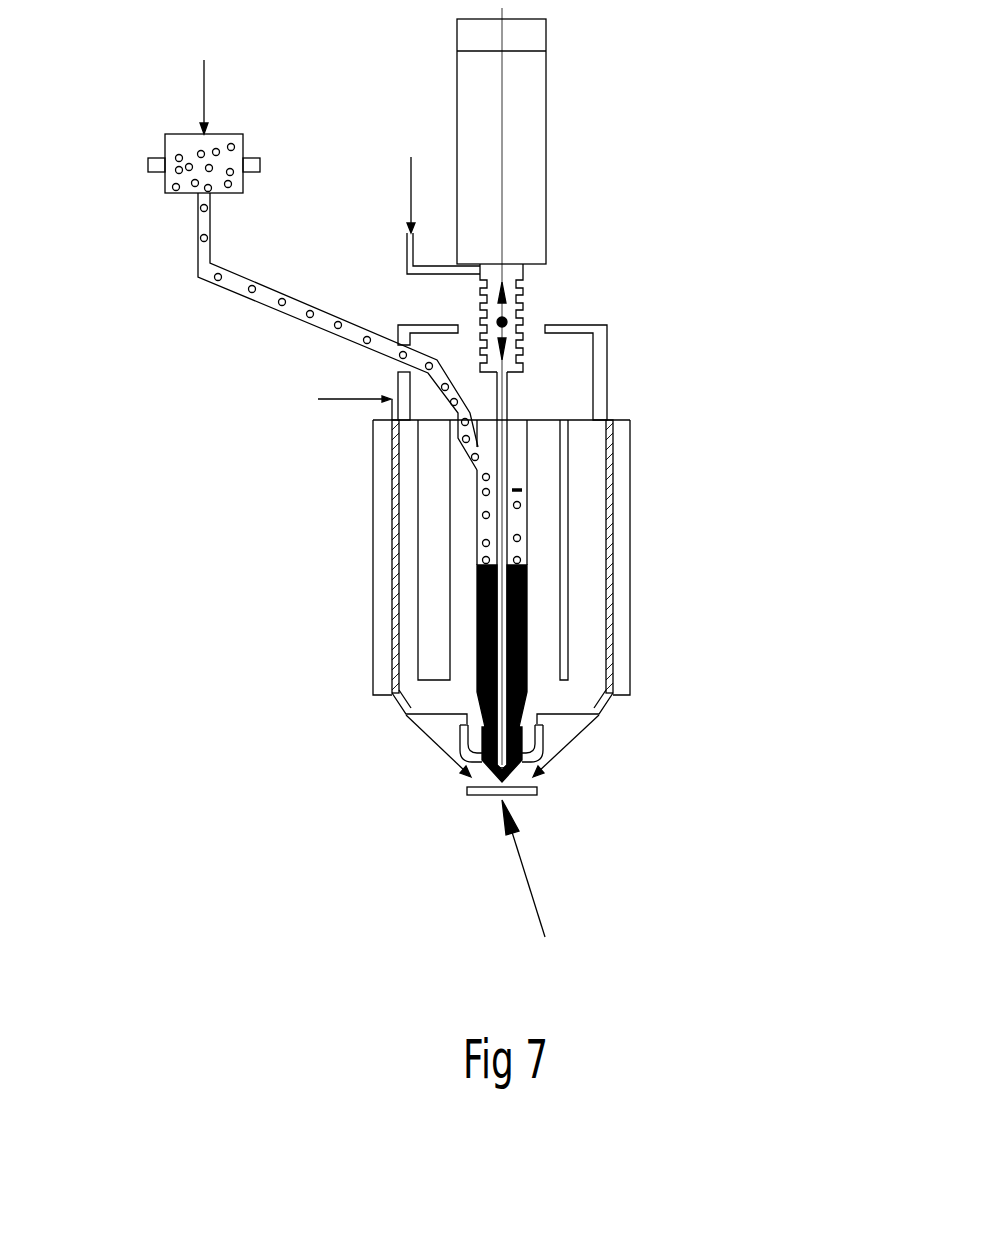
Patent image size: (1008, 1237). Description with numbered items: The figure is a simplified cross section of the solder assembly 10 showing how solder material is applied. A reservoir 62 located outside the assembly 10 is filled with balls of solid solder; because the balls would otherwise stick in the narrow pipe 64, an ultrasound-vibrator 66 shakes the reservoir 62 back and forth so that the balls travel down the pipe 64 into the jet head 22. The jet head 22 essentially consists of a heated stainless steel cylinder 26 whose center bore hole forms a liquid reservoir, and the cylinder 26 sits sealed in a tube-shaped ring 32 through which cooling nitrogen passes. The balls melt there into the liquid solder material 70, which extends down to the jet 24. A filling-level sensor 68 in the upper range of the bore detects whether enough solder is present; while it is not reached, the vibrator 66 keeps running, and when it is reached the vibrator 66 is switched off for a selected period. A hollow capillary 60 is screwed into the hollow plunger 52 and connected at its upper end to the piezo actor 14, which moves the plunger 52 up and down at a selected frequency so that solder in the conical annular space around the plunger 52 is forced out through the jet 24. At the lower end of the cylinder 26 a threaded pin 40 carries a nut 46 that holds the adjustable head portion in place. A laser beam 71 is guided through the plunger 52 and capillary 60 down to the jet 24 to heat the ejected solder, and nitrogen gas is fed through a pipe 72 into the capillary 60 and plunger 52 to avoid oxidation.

The solder assembly 10 is at (680, 242).
The piezo actor 14 is at (526, 143).
The jet head 22 is at (583, 611).
The jet 24 is at (545, 881).
The stainless steel cylinder 26 is at (560, 538).
The tube-shaped ring 32 is at (380, 613).
The threaded pin 40 is at (527, 727).
The nut 46 is at (468, 757).
The plunger 52 is at (512, 770).
The capillary 60 is at (500, 447).
The reservoir 62 is at (217, 139).
The pipe 64 is at (240, 302).
The ultrasound-vibrator 66 is at (157, 163).
The filling-level sensor 68 is at (517, 489).
The liquid solder material 70 is at (477, 648).
The laser beam 71 is at (505, 527).
The pipe 72 is at (413, 258).